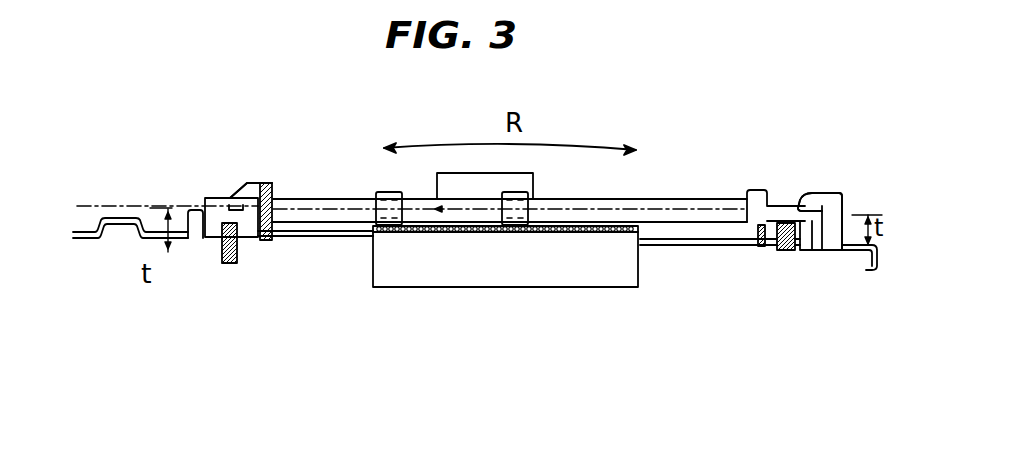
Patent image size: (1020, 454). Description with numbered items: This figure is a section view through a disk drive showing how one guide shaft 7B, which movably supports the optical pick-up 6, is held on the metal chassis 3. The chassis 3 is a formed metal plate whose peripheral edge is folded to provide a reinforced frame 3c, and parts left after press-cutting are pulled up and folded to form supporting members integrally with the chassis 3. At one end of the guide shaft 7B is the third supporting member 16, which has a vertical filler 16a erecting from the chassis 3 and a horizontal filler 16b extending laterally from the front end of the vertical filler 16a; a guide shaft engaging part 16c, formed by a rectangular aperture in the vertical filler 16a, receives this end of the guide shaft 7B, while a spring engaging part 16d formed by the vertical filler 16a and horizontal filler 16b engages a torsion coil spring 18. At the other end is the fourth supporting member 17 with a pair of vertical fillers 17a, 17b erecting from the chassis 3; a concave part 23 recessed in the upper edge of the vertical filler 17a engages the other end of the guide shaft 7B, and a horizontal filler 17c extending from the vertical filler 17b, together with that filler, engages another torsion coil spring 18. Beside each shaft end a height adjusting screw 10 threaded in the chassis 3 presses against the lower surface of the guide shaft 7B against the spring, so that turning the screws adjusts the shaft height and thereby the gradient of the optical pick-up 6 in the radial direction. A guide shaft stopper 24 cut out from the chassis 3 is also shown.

The chassis 3 is at (153, 239).
The reinforced frame 3c is at (118, 239).
The optical pick-up 6 is at (480, 258).
The guide shaft 7B is at (566, 181).
The height adjusting screw 10 is at (227, 258).
The third supporting member 16 is at (205, 169).
The vertical filler 16a is at (272, 222).
The horizontal filler 16b is at (246, 184).
The guide shaft engaging part 16c is at (260, 182).
The spring engaging part 16d is at (266, 211).
The fourth supporting member 17 is at (812, 187).
The vertical filler 17a is at (743, 240).
The vertical filler 17b is at (857, 177).
The horizontal filler 17c is at (759, 180).
The torsion coil spring 18 is at (266, 248).
The concave part 23 is at (757, 190).
The guide shaft stopper 24 is at (190, 204).